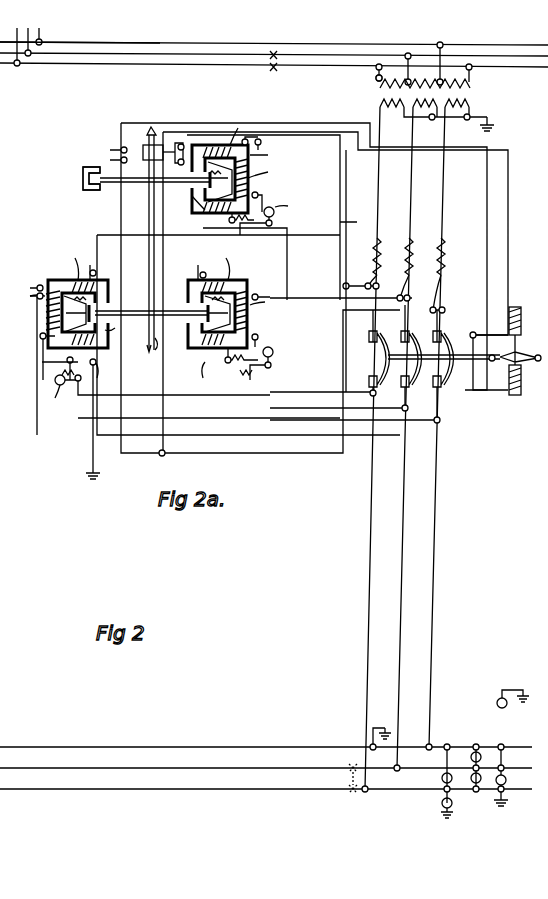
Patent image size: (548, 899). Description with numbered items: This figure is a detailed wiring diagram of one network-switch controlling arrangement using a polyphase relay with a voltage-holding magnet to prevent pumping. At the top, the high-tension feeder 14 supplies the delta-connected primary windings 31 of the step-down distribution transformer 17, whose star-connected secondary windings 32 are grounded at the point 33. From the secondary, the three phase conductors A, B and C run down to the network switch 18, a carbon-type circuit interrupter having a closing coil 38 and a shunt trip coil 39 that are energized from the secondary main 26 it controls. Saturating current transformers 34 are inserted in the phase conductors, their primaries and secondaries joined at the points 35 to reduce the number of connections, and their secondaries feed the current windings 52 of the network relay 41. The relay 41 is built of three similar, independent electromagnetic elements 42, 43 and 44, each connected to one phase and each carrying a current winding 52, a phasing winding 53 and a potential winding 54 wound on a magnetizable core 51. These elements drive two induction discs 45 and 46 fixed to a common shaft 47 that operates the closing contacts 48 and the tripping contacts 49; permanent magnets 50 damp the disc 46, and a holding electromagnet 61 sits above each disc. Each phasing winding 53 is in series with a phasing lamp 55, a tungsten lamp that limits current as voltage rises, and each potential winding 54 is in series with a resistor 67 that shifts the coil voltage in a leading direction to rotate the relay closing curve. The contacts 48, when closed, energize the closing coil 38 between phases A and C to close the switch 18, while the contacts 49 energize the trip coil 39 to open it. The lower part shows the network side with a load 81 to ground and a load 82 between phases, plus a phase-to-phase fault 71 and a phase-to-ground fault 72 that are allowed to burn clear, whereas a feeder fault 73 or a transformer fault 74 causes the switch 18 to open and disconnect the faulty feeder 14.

The high-tension feeder 14 is at (41, 31).
The distribution transformer 17 is at (448, 81).
The network switch 18 is at (455, 338).
The secondary main 26 is at (378, 177).
The primary windings 31 is at (470, 84).
The secondary windings 32 is at (466, 108).
The ground point 33 is at (494, 129).
The current transformer 34 is at (445, 248).
The connection points 35 is at (376, 280).
The closing coil 38 is at (521, 305).
The shunt trip coil 39 is at (528, 405).
The network relay 41 is at (166, 265).
The electromagnetic element 42 is at (258, 186).
The electromagnetic element 43 is at (233, 317).
The electromagnetic element 44 is at (150, 348).
The induction disc 45 is at (135, 311).
The induction disc 46 is at (108, 187).
The common shaft 47 is at (149, 352).
The closing contacts 48 is at (180, 143).
The tripping contacts 49 is at (110, 150).
The permanent magnets 50 is at (83, 180).
The magnetizable core 51 is at (196, 241).
The current winding 52 is at (156, 196).
The phasing winding 53 is at (147, 237).
The potential winding 54 is at (150, 288).
The phasing lamp 55 is at (275, 360).
The holding electromagnet 61 is at (149, 303).
The resistor 67 is at (42, 363).
The phase-to-phase fault 71 is at (350, 779).
The phase-to-ground fault 72 is at (370, 733).
The feeder fault 73 is at (276, 66).
The transformer fault 74 is at (376, 78).
The load to ground 81 is at (514, 780).
The load between phases 82 is at (494, 764).